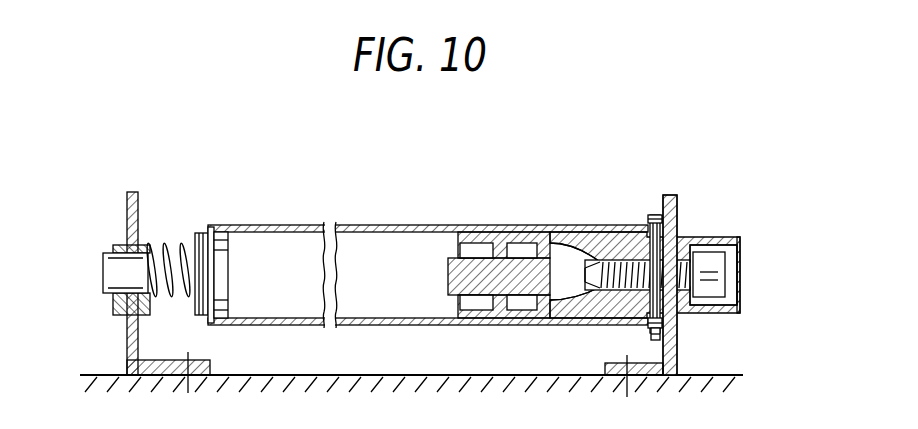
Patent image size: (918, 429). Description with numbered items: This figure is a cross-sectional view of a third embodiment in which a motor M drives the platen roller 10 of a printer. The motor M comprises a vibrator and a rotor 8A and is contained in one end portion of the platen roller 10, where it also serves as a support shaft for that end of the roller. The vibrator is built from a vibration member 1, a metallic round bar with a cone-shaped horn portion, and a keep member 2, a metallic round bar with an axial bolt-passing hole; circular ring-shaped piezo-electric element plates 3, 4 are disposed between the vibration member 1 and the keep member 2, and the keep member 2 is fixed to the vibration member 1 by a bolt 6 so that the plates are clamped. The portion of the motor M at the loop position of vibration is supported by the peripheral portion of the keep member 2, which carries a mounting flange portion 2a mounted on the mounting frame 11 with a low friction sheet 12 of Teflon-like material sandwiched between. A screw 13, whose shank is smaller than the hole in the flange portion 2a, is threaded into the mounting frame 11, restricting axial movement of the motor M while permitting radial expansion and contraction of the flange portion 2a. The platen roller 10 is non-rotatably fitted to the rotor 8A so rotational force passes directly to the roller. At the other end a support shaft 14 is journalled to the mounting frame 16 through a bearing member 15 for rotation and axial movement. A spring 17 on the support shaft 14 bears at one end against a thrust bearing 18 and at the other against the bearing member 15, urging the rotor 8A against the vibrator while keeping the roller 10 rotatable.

The vibration member 1 is at (575, 248).
The keep member 2 is at (733, 237).
The mounting flange portion 2a is at (655, 340).
The piezo-electric element plate 3 is at (637, 223).
The piezo-electric element plate 4 is at (637, 223).
The bolt 6 is at (706, 258).
The rotor 8A is at (543, 230).
The platen roller 10 is at (383, 225).
The mounting frame 11 is at (680, 352).
The low friction sheet 12 is at (667, 197).
The screw 13 is at (680, 327).
The support shaft 14 is at (180, 283).
The bearing member 15 is at (147, 243).
The mounting frame 16 is at (125, 212).
The spring 17 is at (173, 243).
The thrust bearing 18 is at (205, 233).
The motor M is at (613, 230).